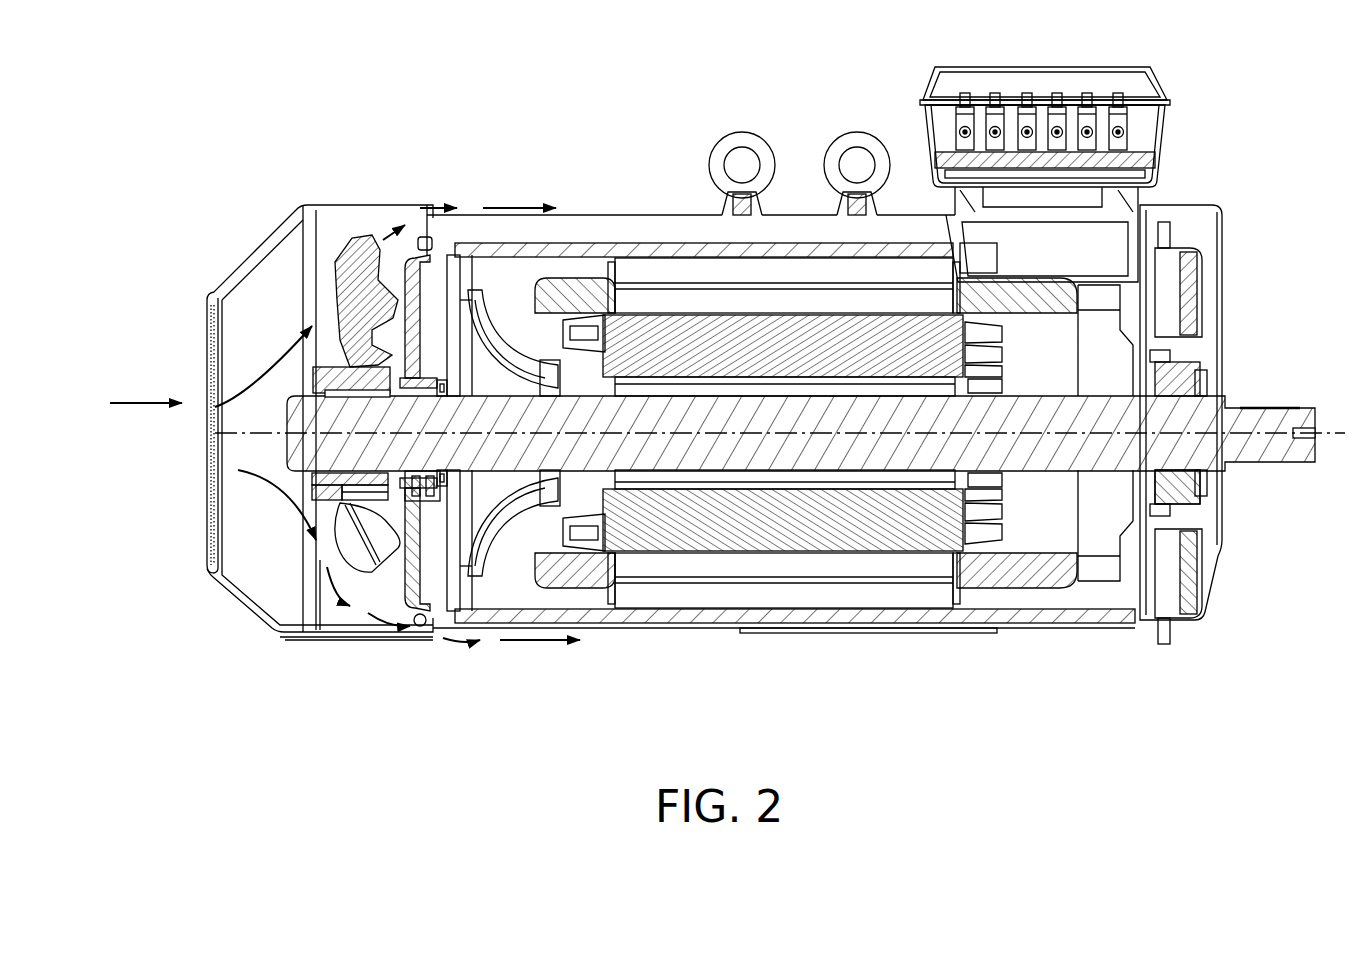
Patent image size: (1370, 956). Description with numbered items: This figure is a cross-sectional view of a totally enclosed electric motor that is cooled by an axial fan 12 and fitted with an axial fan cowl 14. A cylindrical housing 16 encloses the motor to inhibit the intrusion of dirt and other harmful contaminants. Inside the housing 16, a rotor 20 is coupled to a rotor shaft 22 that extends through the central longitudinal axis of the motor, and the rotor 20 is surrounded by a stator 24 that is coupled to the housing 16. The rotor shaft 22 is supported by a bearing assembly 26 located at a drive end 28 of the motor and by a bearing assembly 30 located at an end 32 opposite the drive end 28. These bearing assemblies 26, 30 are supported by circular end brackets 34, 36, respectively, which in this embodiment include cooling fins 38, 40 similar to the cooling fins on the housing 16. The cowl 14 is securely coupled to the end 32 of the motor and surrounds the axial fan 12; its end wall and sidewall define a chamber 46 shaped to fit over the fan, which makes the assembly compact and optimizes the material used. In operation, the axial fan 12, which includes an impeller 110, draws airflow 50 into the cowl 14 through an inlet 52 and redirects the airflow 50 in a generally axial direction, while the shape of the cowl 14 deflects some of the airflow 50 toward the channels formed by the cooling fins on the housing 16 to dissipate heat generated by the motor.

The axial fan 12 is at (345, 240).
The axial fan cowl 14 is at (257, 255).
The cylindrical housing 16 is at (445, 642).
The rotor 20 is at (885, 530).
The rotor shaft 22 is at (1290, 462).
The stator 24 is at (1052, 587).
The bearing assembly 26 is at (1200, 480).
The drive end 28 is at (1224, 235).
The bearing assembly 30 is at (405, 493).
The end 32 is at (353, 645).
The circular end bracket 34 is at (1204, 273).
The circular end bracket 36 is at (412, 577).
The cooling fins 38 is at (1192, 572).
The cooling fins 40 is at (378, 580).
The chamber 46 is at (333, 605).
The airflow 50 is at (518, 207).
The inlet 52 is at (207, 548).
The impeller 110 is at (367, 238).